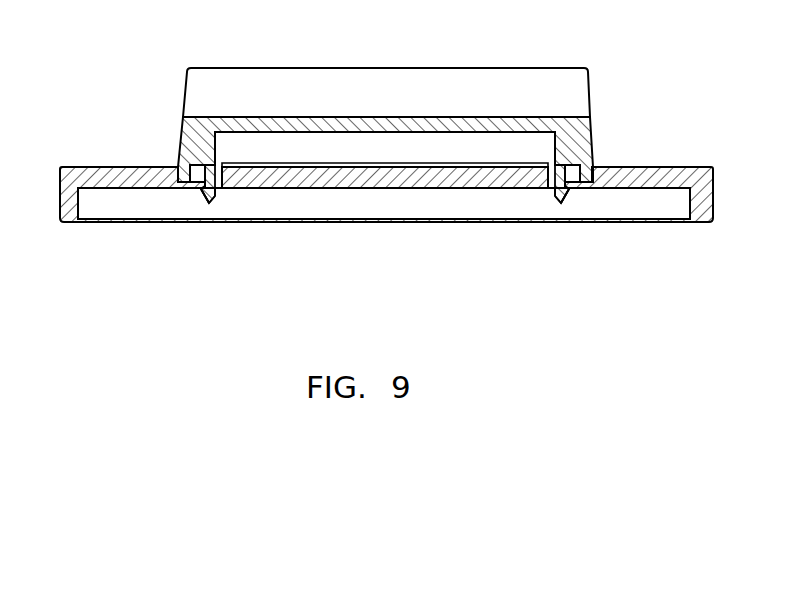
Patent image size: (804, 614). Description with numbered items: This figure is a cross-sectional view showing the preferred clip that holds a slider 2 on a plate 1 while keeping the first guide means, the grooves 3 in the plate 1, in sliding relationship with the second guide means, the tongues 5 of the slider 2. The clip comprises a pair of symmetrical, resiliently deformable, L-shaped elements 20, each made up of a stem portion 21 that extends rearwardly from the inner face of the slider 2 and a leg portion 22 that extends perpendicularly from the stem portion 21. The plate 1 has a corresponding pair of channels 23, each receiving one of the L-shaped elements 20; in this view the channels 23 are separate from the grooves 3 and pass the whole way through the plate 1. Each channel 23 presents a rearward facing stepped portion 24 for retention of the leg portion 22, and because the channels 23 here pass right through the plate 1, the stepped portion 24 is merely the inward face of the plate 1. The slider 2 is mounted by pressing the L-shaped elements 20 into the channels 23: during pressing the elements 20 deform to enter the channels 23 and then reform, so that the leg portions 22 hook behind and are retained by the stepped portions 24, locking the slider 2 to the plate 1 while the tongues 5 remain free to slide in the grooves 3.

The plate 1 is at (74, 178).
The slider 2 is at (190, 130).
The grooves 3 is at (200, 188).
The tongues 5 is at (200, 183).
The L-shaped elements 20 is at (218, 198).
The stem portion 21 is at (217, 160).
The leg portion 22 is at (211, 192).
The channels 23 is at (216, 192).
The stepped portion 24 is at (203, 191).